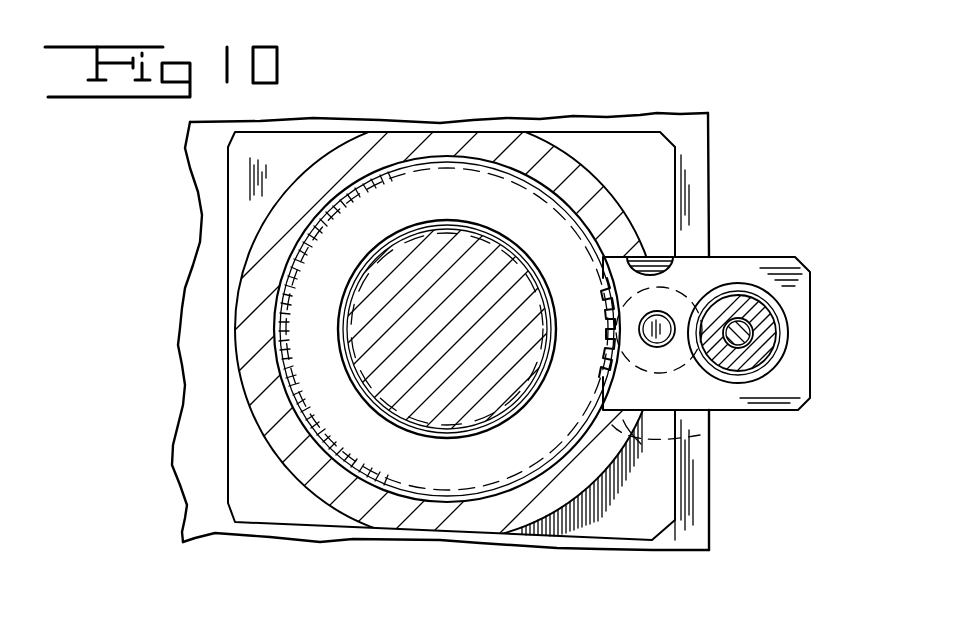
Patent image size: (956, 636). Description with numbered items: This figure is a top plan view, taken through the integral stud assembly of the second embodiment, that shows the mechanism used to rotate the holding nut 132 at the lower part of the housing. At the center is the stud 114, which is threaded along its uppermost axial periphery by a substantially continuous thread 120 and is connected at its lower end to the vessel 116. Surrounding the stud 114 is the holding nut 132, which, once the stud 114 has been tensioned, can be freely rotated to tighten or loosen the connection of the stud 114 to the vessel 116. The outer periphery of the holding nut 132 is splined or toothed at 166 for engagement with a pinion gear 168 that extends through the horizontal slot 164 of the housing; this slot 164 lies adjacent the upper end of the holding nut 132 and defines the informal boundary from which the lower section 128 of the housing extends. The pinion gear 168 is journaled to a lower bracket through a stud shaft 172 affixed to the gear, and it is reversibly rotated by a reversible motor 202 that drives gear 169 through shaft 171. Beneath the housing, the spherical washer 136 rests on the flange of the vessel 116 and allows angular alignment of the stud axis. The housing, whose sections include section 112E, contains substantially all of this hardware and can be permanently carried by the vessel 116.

The vessel 116 is at (712, 128).
The housing section 112E is at (312, 502).
The stud 114 is at (472, 250).
The thread 120 is at (413, 436).
The lower section 128 is at (810, 260).
The holding nut 132 is at (489, 457).
The spherical washer 136 is at (660, 510).
The horizontal slot 164 is at (648, 272).
The splines or teeth 166 is at (592, 366).
The pinion gear 168 is at (698, 435).
The gear 169 is at (743, 382).
The shaft 171 is at (740, 333).
The stud shaft 172 is at (659, 340).
The reversible motor 202 is at (762, 348).